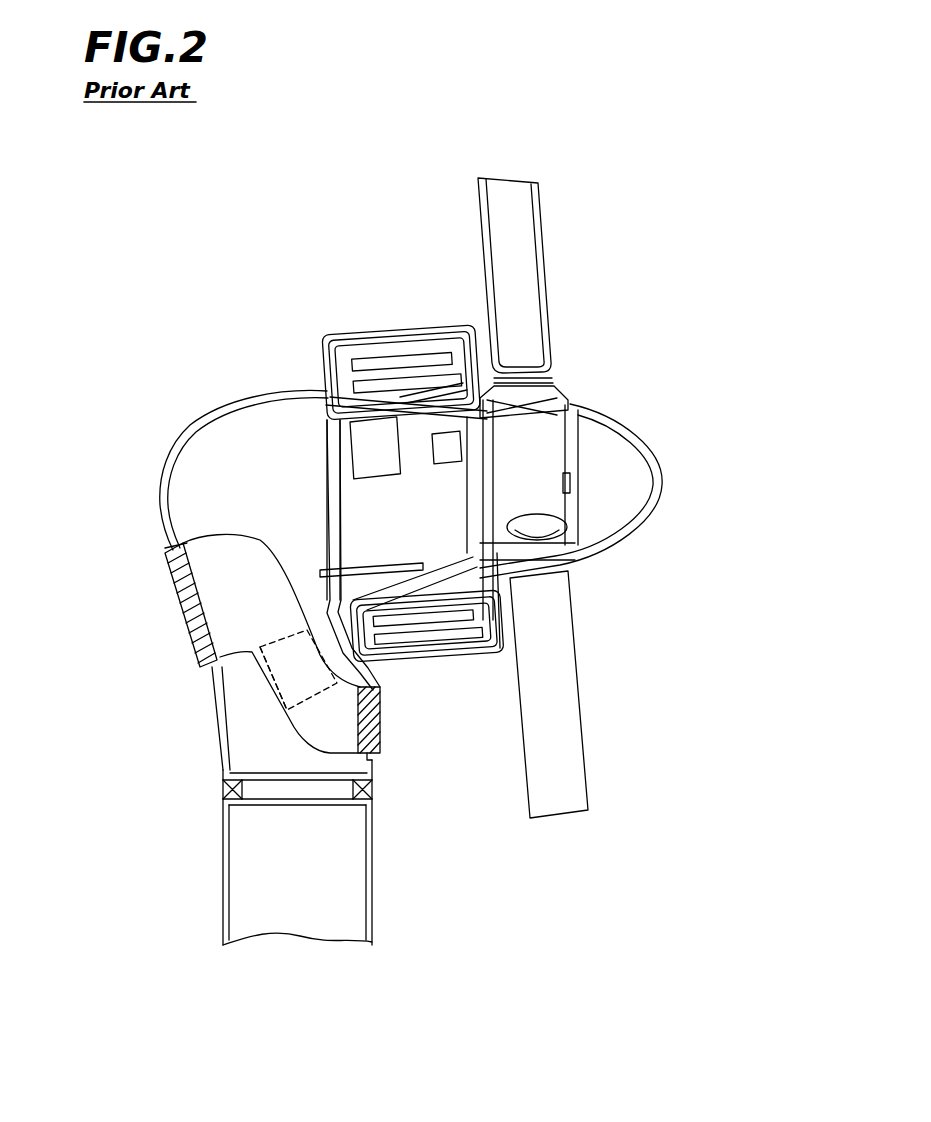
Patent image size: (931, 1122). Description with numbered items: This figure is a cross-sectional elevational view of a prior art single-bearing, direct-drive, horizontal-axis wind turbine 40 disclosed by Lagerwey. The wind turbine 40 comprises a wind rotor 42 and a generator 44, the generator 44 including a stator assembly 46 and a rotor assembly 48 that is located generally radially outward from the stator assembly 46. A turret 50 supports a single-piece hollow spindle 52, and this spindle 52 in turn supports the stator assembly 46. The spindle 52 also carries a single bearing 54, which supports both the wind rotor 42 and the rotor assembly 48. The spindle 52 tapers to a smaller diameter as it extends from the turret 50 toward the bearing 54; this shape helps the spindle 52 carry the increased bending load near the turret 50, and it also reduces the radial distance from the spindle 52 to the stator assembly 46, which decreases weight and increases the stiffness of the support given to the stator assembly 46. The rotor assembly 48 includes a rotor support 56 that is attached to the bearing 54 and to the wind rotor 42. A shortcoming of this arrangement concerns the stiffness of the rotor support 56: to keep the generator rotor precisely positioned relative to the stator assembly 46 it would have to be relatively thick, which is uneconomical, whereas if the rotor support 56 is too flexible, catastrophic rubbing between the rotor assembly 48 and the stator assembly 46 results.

The wind turbine 40 is at (155, 336).
The wind rotor 42 is at (650, 520).
The generator 44 is at (410, 270).
The stator assembly 46 is at (350, 374).
The rotor assembly 48 is at (380, 330).
The turret 50 is at (172, 440).
The hollow spindle 52 is at (345, 412).
The bearing 54 is at (530, 410).
The rotor support 56 is at (343, 332).